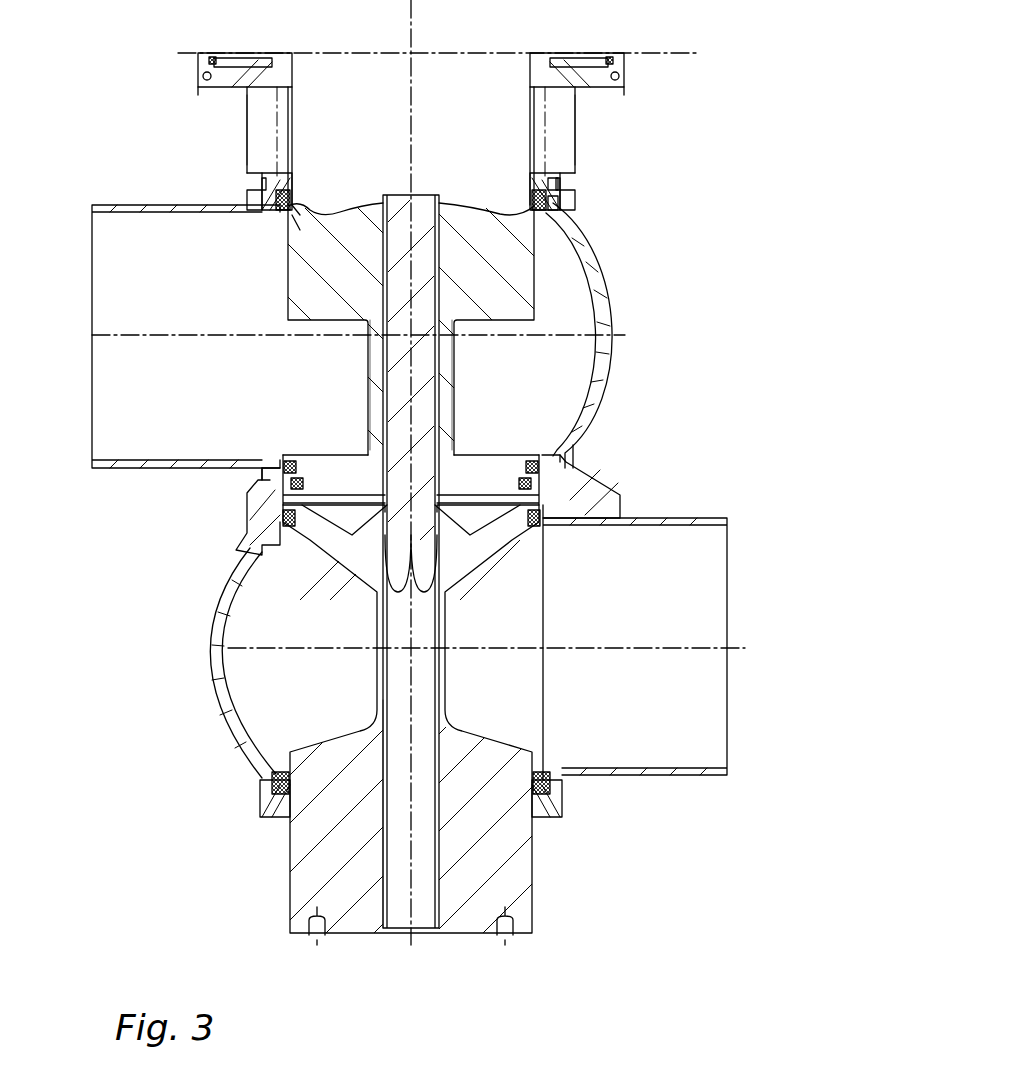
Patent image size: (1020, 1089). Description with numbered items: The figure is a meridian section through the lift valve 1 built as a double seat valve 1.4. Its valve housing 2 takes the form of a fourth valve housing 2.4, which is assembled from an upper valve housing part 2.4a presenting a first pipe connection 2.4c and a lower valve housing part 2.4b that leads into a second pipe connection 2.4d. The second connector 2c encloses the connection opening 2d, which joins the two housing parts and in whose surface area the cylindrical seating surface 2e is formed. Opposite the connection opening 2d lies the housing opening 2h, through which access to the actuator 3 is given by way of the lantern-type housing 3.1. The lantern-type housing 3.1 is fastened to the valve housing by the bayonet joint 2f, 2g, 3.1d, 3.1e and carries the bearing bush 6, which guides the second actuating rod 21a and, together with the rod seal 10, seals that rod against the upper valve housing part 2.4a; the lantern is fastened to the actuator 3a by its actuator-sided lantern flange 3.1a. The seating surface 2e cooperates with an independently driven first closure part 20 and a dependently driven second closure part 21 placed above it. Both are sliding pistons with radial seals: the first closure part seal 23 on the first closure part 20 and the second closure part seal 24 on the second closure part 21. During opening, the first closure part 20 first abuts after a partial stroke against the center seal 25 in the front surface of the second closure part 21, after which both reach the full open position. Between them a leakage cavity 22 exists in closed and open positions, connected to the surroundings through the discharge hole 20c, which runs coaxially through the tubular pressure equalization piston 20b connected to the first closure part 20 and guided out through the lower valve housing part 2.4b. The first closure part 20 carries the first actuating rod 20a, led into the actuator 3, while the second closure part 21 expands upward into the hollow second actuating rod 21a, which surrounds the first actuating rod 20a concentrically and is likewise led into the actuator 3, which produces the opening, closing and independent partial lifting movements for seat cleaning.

The lift valve 1 is at (632, 470).
The double seat valve 1.4 is at (667, 458).
The valve housing 2 is at (232, 516).
The fourth valve housing 2.4 is at (176, 514).
The second connector 2c is at (624, 498).
The connection opening 2d is at (478, 495).
The seating surface 2e is at (317, 532).
The bayonet joint element 2f is at (232, 175).
The bayonet joint element 2g is at (553, 203).
The housing opening 2h is at (300, 220).
The actuator 3 is at (670, 53).
The actuator 3a is at (618, 60).
The lantern-type housing 3.1 is at (586, 143).
The actuator-sided lantern flange 3.1a is at (582, 72).
The bayonet joint element 3.1d is at (462, 174).
The bayonet joint element 3.1e is at (553, 184).
The bearing bush 6 is at (262, 111).
The rod seal 10 is at (282, 200).
The first closure part 20 is at (315, 528).
The first actuating rod 20a is at (412, 356).
The pressure equalization piston 20b is at (322, 873).
The discharge hole 20c is at (410, 828).
The second closure part 21 is at (585, 478).
The second actuating rod 21a is at (495, 245).
The leakage cavity 22 is at (357, 513).
The first closure part seal 23 is at (533, 522).
The second closure part seal 24 is at (540, 470).
The center seal 25 is at (297, 483).
The upper valve housing part 2.4a is at (600, 302).
The lower valve housing part 2.4b is at (216, 664).
The first pipe connection 2.4c is at (140, 207).
The second pipe connection 2.4d is at (705, 768).